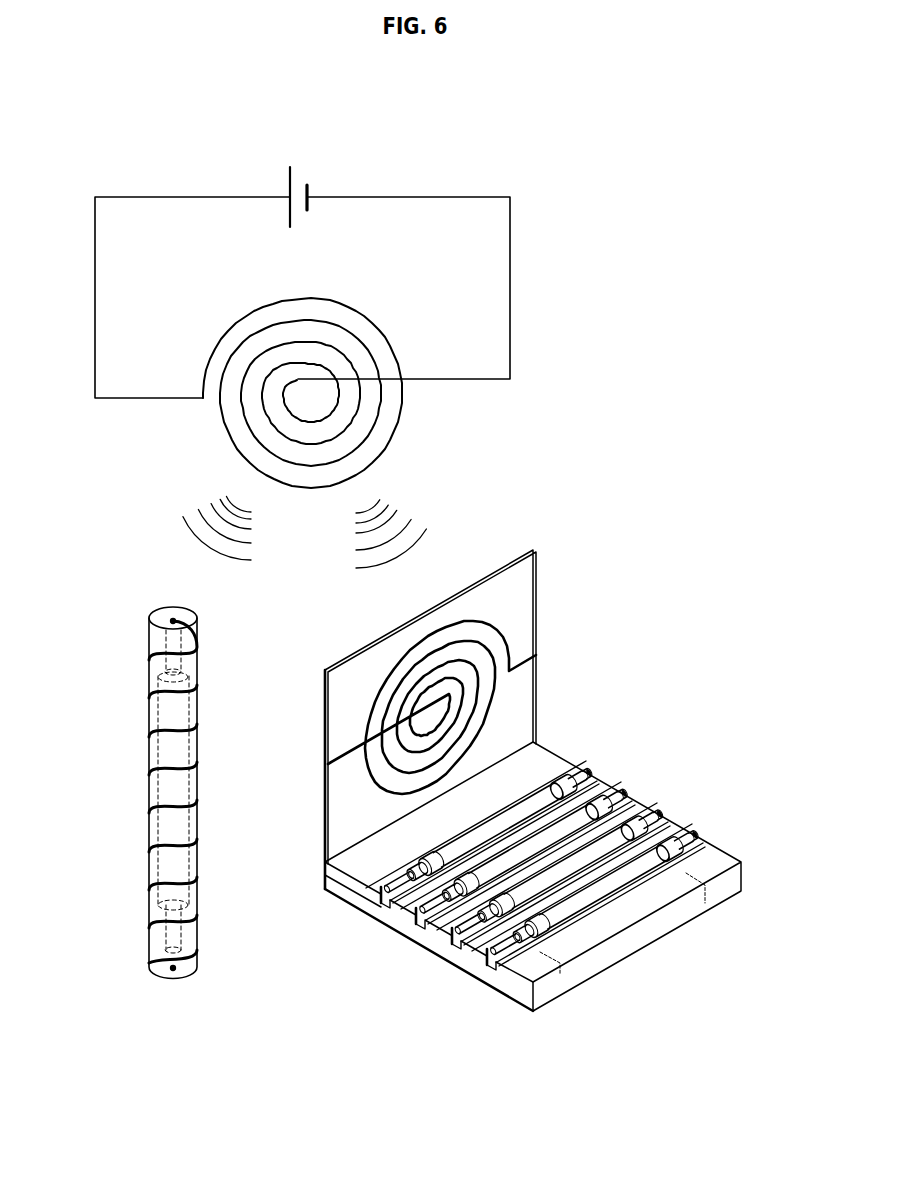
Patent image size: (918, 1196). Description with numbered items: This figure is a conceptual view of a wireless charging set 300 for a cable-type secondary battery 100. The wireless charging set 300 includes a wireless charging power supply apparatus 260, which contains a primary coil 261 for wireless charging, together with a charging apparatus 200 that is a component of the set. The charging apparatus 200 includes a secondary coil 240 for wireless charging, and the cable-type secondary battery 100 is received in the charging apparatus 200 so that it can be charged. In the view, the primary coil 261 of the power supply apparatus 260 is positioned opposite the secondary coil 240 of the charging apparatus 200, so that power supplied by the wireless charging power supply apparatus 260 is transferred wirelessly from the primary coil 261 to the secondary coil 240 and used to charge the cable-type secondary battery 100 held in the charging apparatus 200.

The cable-type secondary battery 100 is at (663, 837).
The charging apparatus 200 is at (136, 630).
The secondary coil 240 is at (190, 646).
The wireless charging power supply apparatus 260 is at (410, 168).
The primary coil 261 is at (366, 320).
The wireless charging set 300 is at (514, 122).